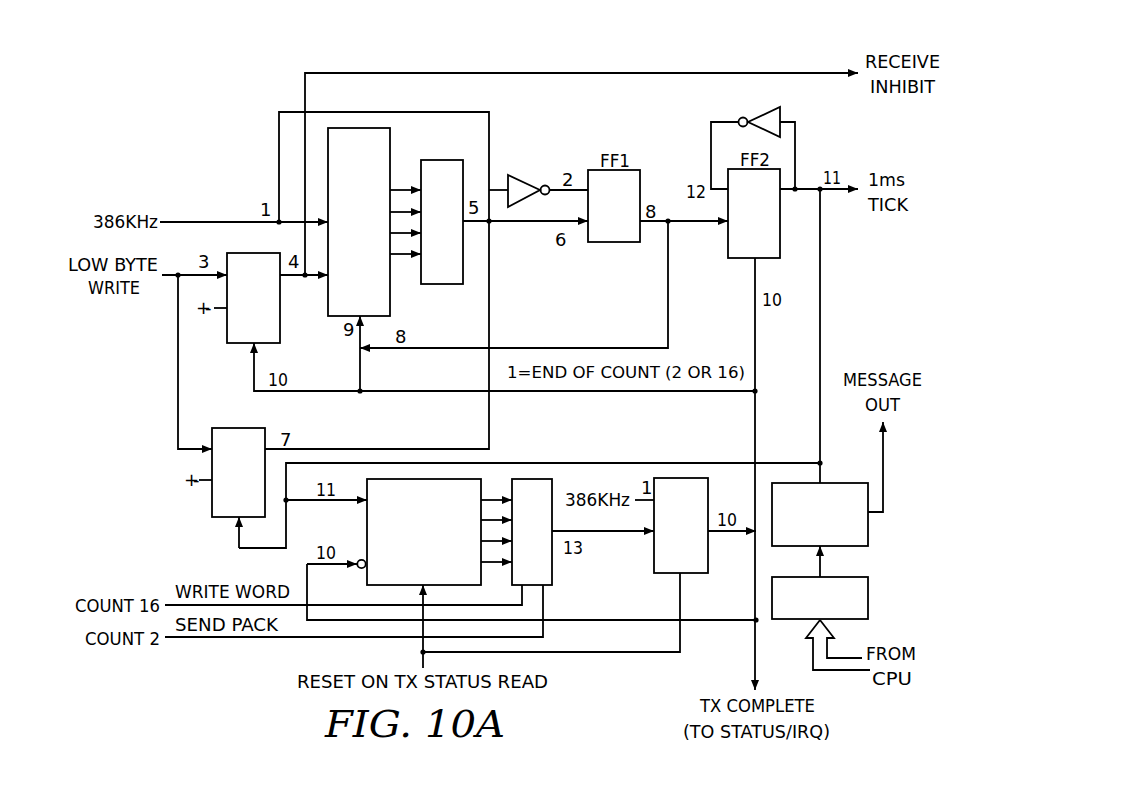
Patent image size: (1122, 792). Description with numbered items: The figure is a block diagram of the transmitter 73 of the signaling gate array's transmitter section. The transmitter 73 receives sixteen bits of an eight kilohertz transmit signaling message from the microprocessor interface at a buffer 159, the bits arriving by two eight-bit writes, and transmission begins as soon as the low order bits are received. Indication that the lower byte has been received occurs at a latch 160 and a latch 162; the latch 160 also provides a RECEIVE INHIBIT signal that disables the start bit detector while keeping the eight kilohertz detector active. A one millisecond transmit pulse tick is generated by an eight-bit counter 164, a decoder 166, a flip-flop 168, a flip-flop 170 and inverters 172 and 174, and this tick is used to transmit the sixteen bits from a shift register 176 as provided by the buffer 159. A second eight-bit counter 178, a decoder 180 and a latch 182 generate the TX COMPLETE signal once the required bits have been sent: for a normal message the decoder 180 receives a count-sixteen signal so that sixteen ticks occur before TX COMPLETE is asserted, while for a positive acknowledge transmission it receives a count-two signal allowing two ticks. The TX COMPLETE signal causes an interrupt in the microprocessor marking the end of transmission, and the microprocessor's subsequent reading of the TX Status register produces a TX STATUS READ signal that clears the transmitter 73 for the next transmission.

The transmitter 73 is at (146, 502).
The buffer 159 is at (868, 595).
The latch 160 is at (280, 318).
The latch 162 is at (228, 428).
The 8-bit counter 164 is at (391, 148).
The decoder 166 is at (443, 284).
The flip-flop 168 is at (612, 243).
The flip-flop 170 is at (740, 258).
The inverter 172 is at (519, 176).
The inverter 174 is at (783, 118).
The shift register 176 is at (868, 528).
The 8-bit counter 178 is at (367, 531).
The decoder 180 is at (552, 565).
The latch 182 is at (656, 574).